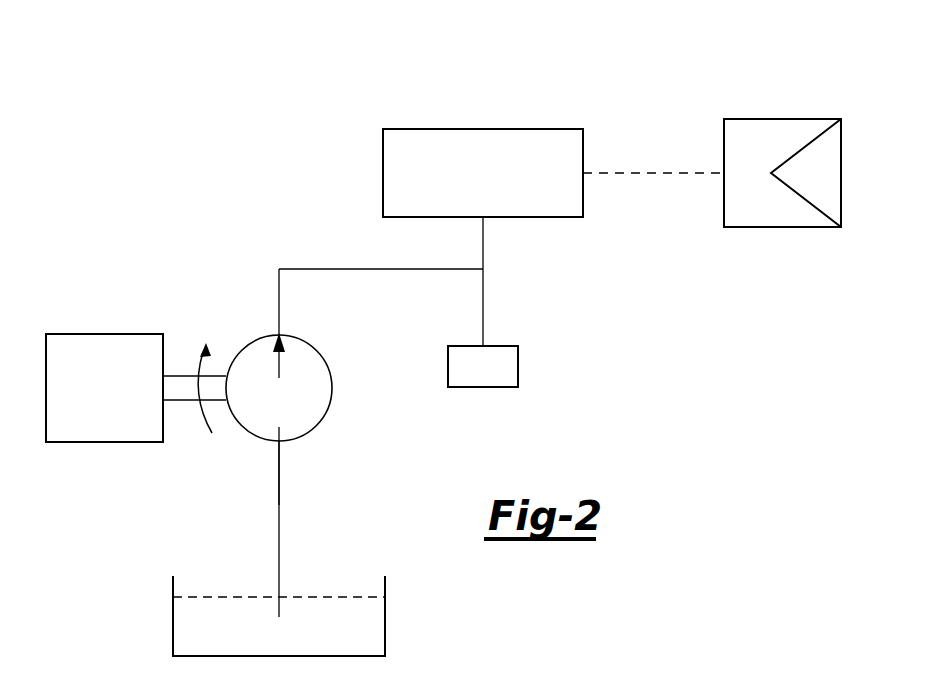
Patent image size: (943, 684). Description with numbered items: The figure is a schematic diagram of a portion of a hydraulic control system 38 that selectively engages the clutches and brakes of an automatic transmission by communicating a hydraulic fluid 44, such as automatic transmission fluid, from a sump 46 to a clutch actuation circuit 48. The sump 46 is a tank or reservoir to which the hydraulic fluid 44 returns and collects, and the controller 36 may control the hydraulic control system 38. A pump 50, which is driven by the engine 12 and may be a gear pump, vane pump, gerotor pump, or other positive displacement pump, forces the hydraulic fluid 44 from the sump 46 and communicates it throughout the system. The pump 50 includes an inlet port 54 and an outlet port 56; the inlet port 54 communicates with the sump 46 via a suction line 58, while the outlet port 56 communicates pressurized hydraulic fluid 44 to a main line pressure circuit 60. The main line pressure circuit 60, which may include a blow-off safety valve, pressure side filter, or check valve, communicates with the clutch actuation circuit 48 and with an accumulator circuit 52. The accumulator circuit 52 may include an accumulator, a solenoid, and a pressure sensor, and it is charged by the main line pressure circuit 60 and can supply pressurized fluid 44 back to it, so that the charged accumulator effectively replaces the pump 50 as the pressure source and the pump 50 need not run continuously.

The engine 12 is at (104, 334).
The controller 36 is at (765, 119).
The hydraulic control system 38 is at (731, 42).
The hydraulic fluid 44 is at (352, 597).
The sump 46 is at (385, 621).
The clutch actuation circuit 48 is at (496, 383).
The pump 50 is at (332, 388).
The accumulator circuit 52 is at (496, 190).
The inlet port 54 is at (279, 441).
The outlet port 56 is at (279, 335).
The suction line 58 is at (279, 505).
The main line pressure circuit 60 is at (336, 269).